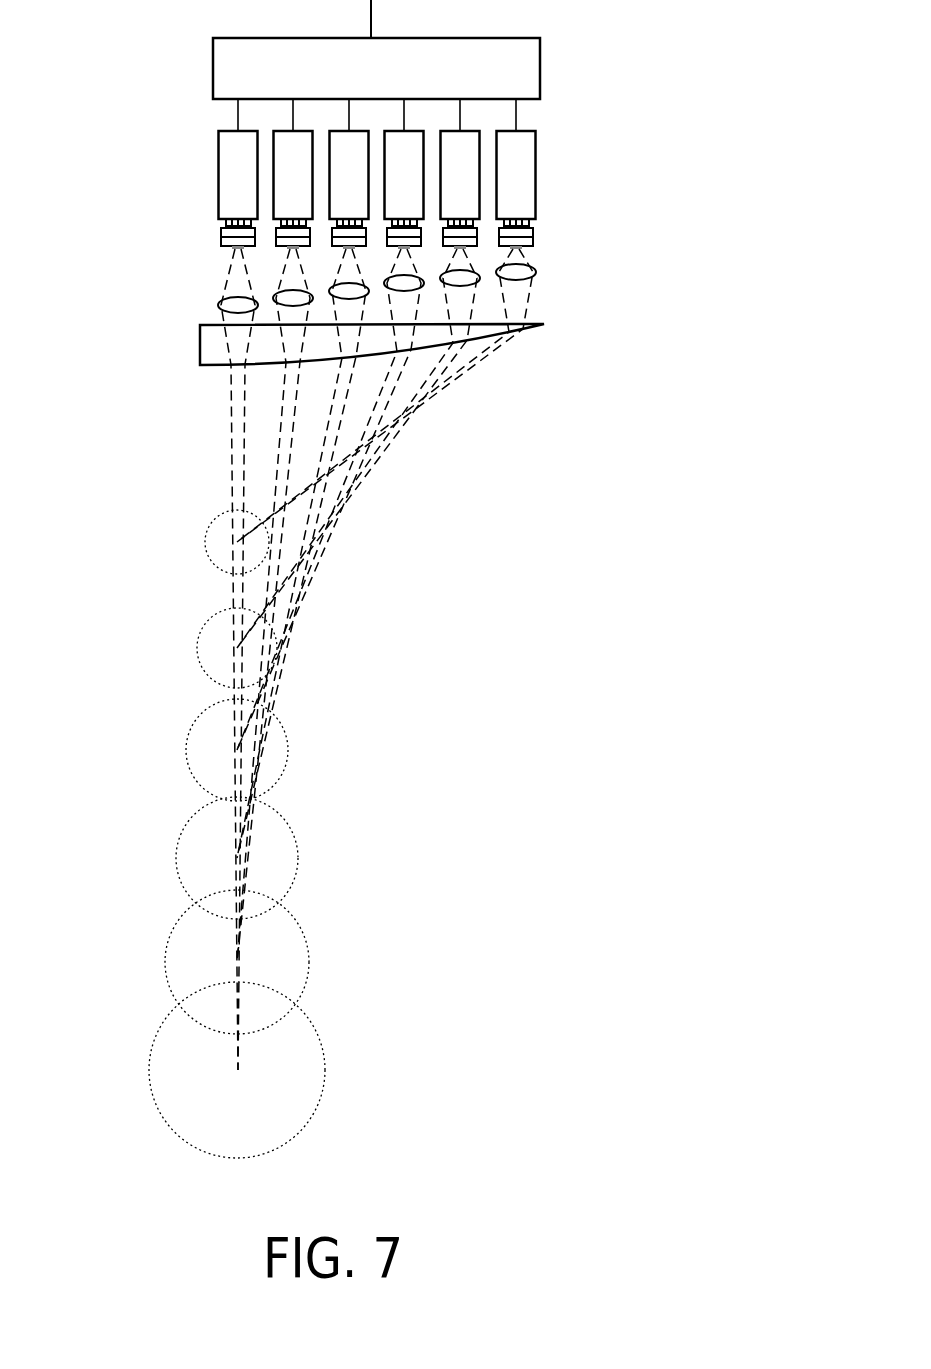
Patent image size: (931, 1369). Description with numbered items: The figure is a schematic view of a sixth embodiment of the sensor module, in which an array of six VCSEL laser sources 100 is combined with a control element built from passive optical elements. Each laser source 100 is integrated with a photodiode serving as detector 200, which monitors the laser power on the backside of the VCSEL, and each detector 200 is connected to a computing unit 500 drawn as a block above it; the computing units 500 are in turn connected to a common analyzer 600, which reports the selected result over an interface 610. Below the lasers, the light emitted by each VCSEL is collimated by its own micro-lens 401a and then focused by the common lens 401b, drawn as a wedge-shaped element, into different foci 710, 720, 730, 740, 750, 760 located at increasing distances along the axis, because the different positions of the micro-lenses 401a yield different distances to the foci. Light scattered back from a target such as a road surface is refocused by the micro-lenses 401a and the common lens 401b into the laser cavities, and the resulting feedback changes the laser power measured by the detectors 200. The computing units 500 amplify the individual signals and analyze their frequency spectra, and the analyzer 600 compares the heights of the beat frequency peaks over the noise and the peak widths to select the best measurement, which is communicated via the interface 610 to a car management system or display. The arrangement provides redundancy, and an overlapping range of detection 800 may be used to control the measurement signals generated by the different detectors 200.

The interface 610 is at (372, 14).
The analyzer 600 is at (357, 83).
The computing unit 500 is at (218, 175).
The detector 200 is at (535, 230).
The laser source 100 is at (535, 239).
The micro-lens 401a is at (218, 305).
The common lens 401b is at (200, 345).
The overlapping range of detection 800 is at (280, 1006).
The focus 710 is at (216, 542).
The focus 720 is at (205, 648).
The focus 730 is at (194, 752).
The focus 740 is at (184, 858).
The focus 750 is at (174, 961).
The focus 760 is at (162, 1070).